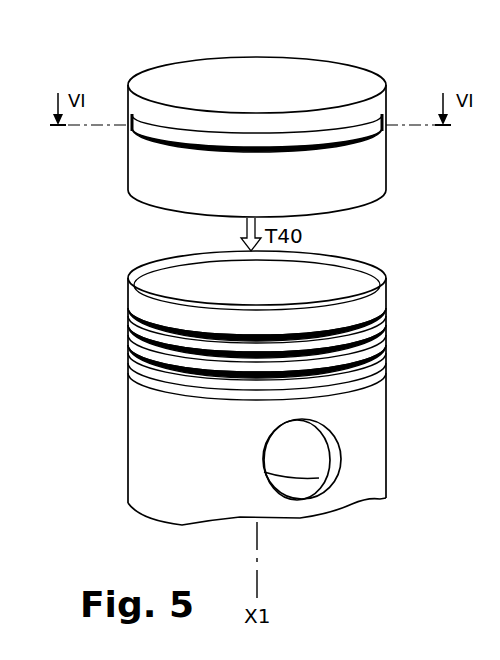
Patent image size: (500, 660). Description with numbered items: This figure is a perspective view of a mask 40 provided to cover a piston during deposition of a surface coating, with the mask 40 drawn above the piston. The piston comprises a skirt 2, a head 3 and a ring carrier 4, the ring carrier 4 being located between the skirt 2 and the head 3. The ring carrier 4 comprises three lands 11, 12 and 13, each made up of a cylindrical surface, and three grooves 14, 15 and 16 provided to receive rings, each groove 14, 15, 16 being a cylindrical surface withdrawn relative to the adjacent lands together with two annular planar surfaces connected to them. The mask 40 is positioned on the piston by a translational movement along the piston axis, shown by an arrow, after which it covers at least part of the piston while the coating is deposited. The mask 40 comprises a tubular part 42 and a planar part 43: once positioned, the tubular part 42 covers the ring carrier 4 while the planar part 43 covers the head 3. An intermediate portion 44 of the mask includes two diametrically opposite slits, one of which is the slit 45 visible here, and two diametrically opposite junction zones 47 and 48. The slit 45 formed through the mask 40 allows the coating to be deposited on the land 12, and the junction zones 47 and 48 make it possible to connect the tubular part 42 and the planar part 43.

The skirt 2 is at (157, 463).
The head 3 is at (335, 282).
The ring carrier 4 is at (252, 374).
The land 11 is at (142, 304).
The land 12 is at (130, 328).
The land 13 is at (132, 363).
The groove 14 is at (393, 316).
The groove 15 is at (393, 342).
The groove 16 is at (393, 363).
The mask 40 is at (233, 119).
The tubular part 42 is at (155, 173).
The planar part 43 is at (173, 82).
The intermediate portion 44 is at (96, 134).
The slit 45 is at (350, 142).
The junction zone 47 is at (128, 116).
The junction zone 48 is at (386, 116).